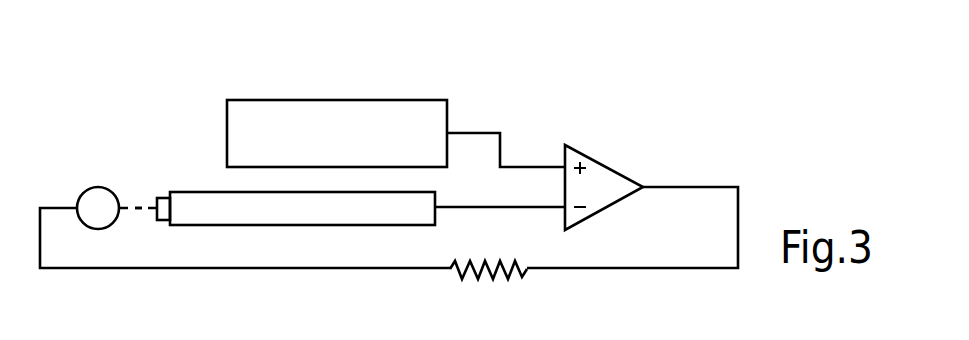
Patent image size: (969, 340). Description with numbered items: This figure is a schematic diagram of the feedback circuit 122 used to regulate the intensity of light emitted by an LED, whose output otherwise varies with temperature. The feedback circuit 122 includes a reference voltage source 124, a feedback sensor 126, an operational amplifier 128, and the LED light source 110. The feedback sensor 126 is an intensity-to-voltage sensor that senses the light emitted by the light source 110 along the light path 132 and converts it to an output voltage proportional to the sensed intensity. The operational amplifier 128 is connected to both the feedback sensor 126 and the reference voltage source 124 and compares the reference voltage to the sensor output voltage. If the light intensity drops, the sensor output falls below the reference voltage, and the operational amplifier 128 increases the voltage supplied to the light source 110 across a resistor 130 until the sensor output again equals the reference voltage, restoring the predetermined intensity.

The LED light source 110 is at (83, 187).
The feedback circuit 122 is at (225, 72).
The reference voltage source 124 is at (313, 100).
The feedback sensor 126 is at (390, 225).
The operational amplifier 128 is at (608, 165).
The resistor 130 is at (493, 279).
The light path 132 is at (138, 203).